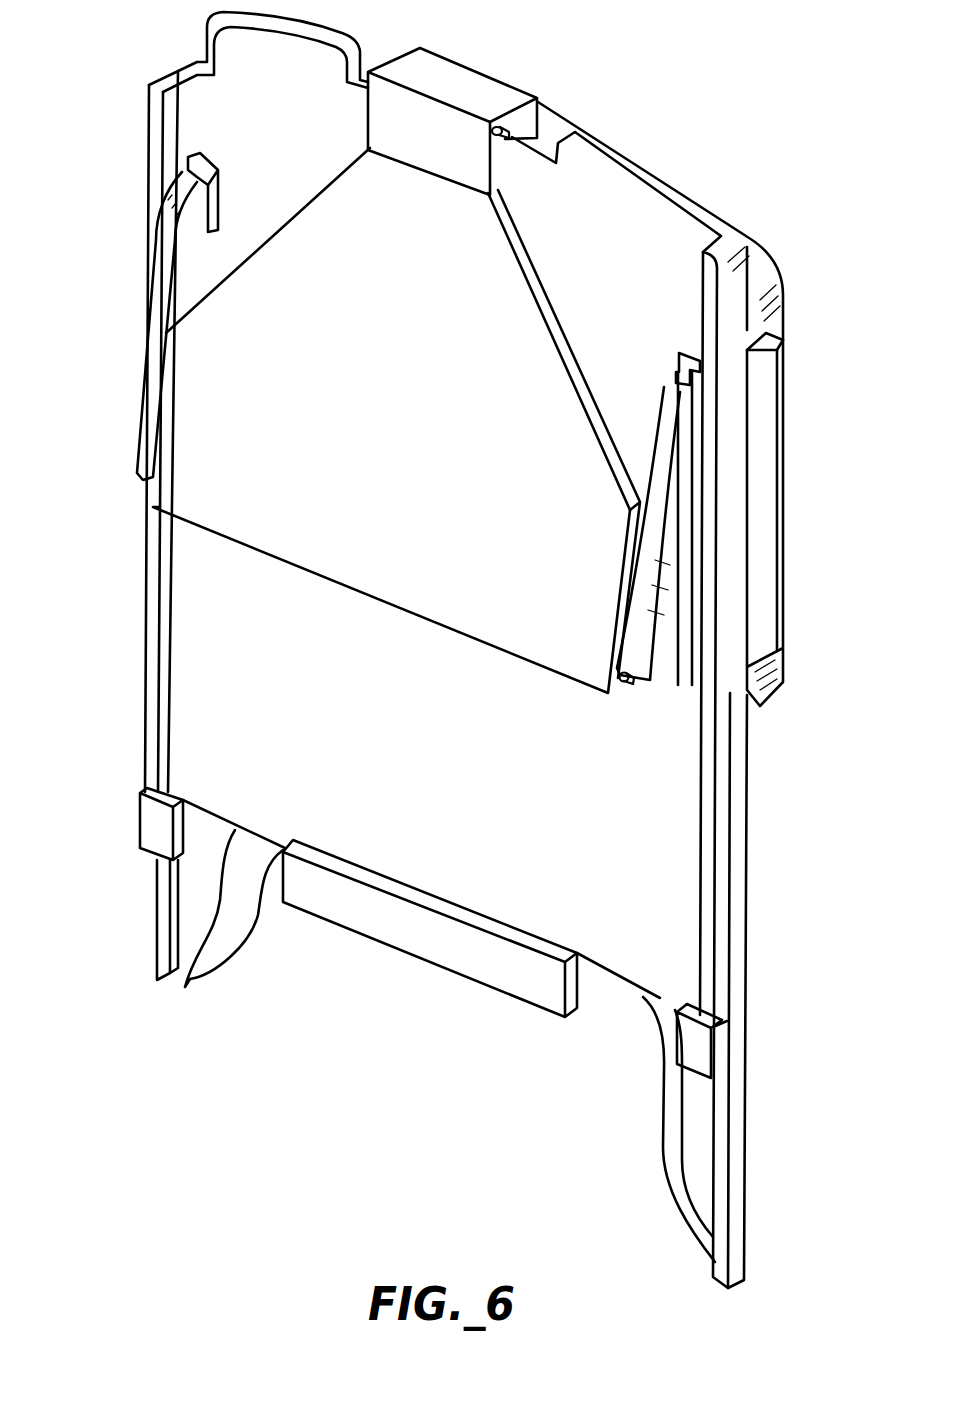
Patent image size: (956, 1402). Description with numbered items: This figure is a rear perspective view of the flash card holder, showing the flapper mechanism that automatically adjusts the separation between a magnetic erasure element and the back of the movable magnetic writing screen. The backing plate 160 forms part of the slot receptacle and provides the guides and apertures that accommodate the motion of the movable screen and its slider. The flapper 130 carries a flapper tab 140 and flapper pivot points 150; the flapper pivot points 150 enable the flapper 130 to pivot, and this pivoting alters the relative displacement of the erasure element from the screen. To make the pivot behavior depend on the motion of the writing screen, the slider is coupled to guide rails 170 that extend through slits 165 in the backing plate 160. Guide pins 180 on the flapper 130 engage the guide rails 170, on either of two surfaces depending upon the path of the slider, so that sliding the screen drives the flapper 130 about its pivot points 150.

The flapper 130 is at (297, 448).
The flapper tab 140 is at (443, 73).
The flapper pivot points 150 is at (498, 124).
The backing plate 160 is at (660, 227).
The slits 165 is at (207, 247).
The guide rails 170 is at (665, 590).
The guide pins 180 is at (622, 688).